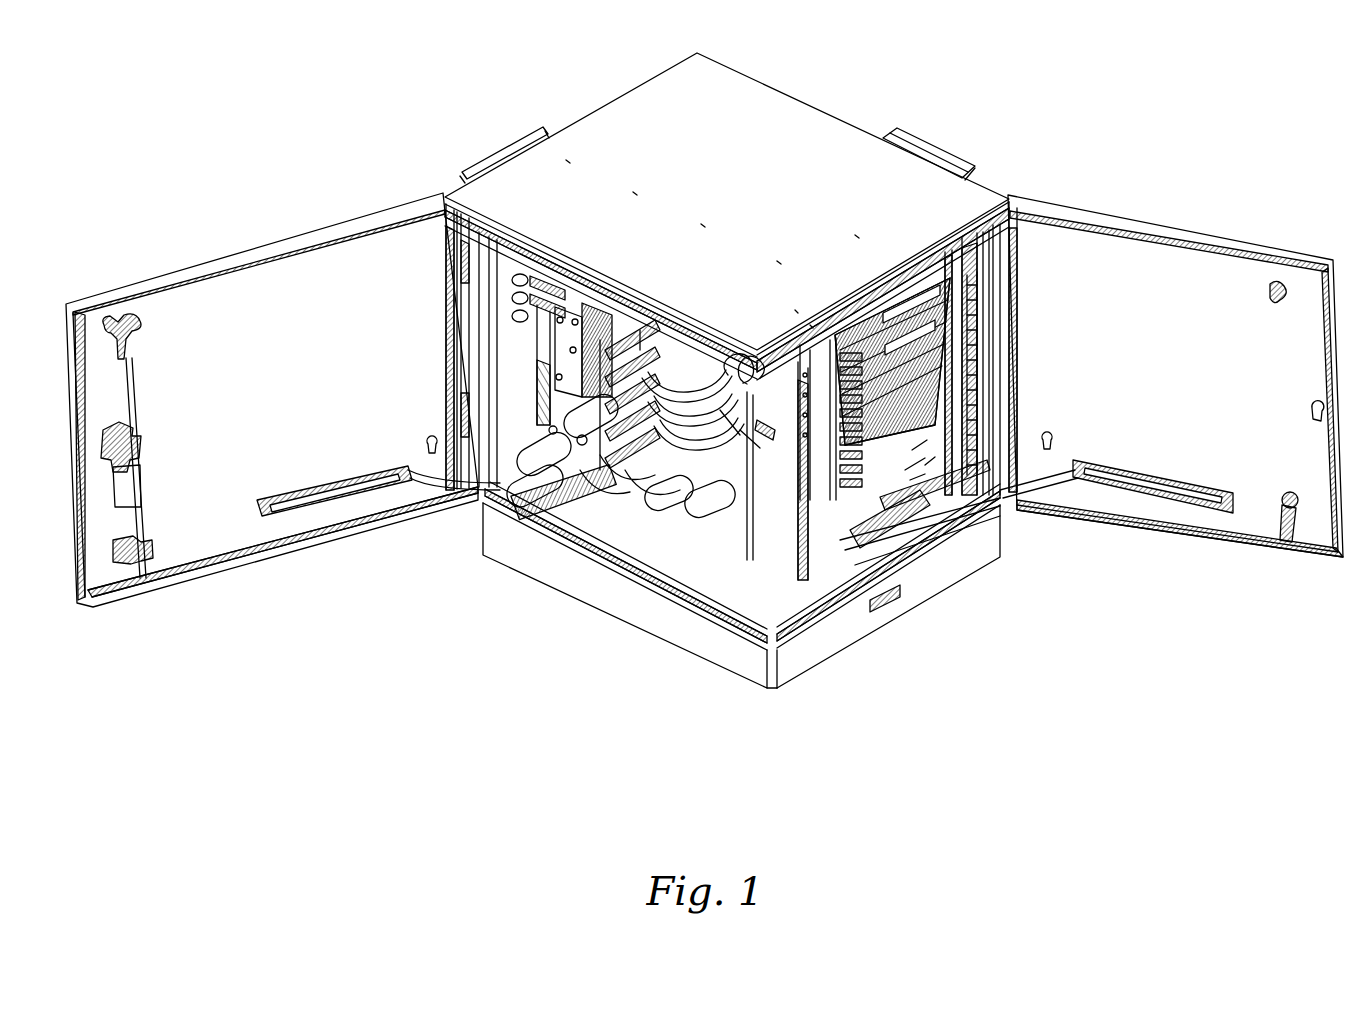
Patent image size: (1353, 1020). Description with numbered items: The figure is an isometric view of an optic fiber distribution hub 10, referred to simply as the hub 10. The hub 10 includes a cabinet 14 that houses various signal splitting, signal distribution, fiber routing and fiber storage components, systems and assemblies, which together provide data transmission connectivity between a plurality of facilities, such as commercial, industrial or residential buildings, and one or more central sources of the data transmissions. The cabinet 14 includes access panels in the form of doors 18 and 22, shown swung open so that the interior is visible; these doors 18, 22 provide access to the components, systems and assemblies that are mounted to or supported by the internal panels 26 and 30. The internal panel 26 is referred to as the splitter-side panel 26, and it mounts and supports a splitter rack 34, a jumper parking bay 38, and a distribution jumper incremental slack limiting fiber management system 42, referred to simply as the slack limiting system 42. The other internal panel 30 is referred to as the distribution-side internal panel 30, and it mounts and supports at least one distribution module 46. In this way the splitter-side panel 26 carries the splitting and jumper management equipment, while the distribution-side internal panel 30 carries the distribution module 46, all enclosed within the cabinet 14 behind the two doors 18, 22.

The optic fiber distribution hub 10 is at (1022, 95).
The cabinet 14 is at (744, 197).
The door 18 is at (191, 555).
The door 22 is at (1323, 557).
The splitter-side panel 26 is at (548, 497).
The distribution-side internal panel 30 is at (925, 455).
The splitter rack 34 is at (602, 290).
The jumper parking bay 38 is at (573, 373).
The slack limiting system 42 is at (700, 335).
The distribution module 46 is at (1000, 505).